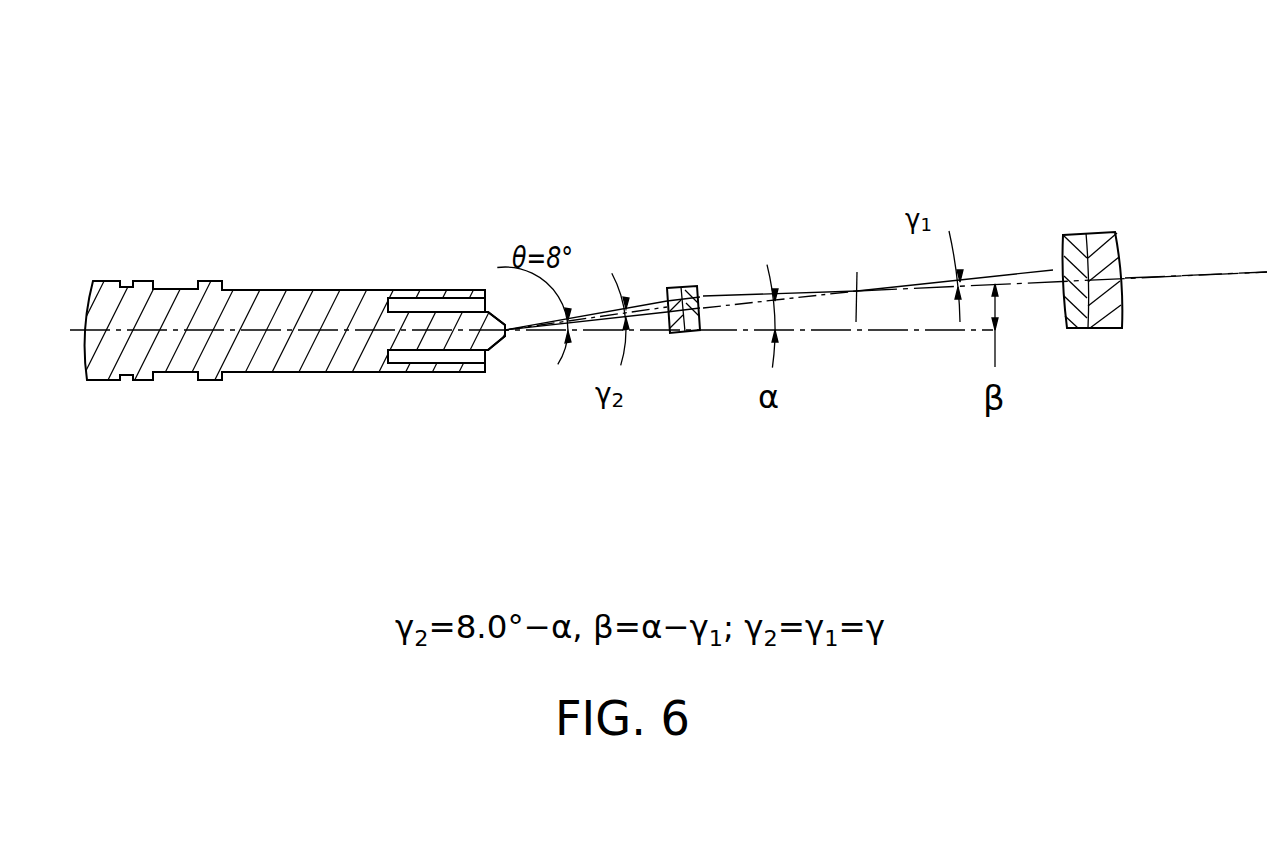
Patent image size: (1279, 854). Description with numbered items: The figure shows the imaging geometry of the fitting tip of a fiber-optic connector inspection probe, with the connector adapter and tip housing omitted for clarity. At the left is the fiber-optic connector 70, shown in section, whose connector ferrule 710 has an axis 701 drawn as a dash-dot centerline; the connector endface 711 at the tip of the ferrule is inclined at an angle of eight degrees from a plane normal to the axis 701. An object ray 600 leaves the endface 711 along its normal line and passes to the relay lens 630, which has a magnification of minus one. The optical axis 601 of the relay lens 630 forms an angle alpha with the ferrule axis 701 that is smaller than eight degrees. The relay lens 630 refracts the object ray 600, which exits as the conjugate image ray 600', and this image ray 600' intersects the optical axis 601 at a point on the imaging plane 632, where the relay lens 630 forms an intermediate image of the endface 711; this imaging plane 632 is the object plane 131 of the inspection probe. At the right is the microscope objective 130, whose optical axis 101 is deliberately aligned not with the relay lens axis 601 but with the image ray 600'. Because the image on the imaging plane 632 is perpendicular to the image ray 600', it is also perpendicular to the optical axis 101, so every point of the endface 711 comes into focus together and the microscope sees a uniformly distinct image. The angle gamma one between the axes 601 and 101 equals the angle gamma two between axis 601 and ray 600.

The fiber-optic connector 70 is at (345, 268).
The axis of the connector ferrule 701 is at (267, 333).
The connector ferrule 710 is at (438, 335).
The connector endface 711 is at (506, 333).
The object ray 600 is at (681, 213).
The conjugate image ray 600' is at (886, 213).
The optical axis of the relay lens 601 is at (650, 315).
The relay lens 630 is at (679, 287).
The imaging plane 632 is at (855, 300).
The object plane of the inspection probe 131 is at (865, 285).
The optical axis of the microscope objective 101 is at (1167, 273).
The microscope objective 130 is at (1103, 331).